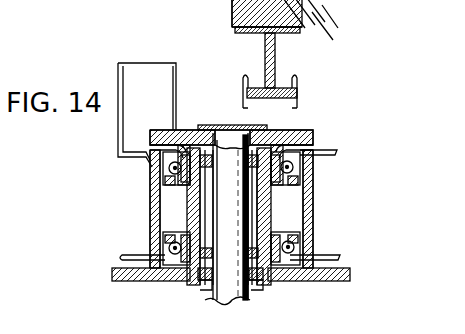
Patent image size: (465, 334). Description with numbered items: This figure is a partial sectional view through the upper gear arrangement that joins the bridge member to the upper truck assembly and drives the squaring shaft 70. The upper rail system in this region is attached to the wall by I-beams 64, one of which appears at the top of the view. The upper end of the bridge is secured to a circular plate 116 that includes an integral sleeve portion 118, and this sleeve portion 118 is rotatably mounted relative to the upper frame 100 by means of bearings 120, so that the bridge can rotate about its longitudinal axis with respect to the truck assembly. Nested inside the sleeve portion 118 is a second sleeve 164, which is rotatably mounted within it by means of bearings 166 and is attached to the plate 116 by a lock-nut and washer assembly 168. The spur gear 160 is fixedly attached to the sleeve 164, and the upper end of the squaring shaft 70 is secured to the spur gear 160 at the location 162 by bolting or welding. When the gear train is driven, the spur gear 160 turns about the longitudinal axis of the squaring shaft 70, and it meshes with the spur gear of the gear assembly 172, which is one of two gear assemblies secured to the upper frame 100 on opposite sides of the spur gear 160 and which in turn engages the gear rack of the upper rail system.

The I-beam 64 is at (238, 10).
The squaring shaft 70 is at (228, 300).
The frame 100 is at (14, 0).
The circular plate 116 is at (115, 276).
The sleeve portion 118 is at (190, 213).
The bearings 120 is at (300, 172).
The spur gear 160 is at (300, 133).
The attachment location 162 is at (213, 124).
The sleeve 164 is at (210, 286).
The bearings 166 is at (188, 167).
The lock-nut and washer assembly 168 is at (258, 282).
The gear assembly 172 is at (82, 0).